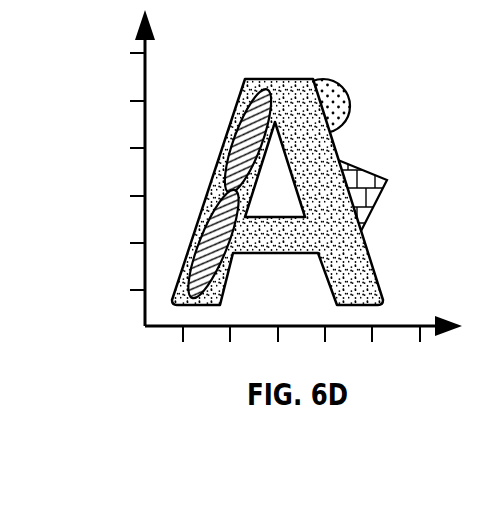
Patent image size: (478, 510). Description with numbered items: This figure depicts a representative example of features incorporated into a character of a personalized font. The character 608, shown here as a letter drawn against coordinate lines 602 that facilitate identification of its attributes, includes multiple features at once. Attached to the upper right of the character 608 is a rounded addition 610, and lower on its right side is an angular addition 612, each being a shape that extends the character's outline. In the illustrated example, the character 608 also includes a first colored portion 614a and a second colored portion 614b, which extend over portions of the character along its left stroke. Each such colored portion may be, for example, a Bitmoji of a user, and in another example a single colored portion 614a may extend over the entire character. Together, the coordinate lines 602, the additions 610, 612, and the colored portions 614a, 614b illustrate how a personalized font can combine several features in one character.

The coordinate lines 602 is at (402, 325).
The character 608 is at (282, 78).
The rounded addition 610 is at (335, 83).
The angular addition 612 is at (370, 172).
The first colored portion 614a is at (232, 137).
The second colored portion 614b is at (215, 177).